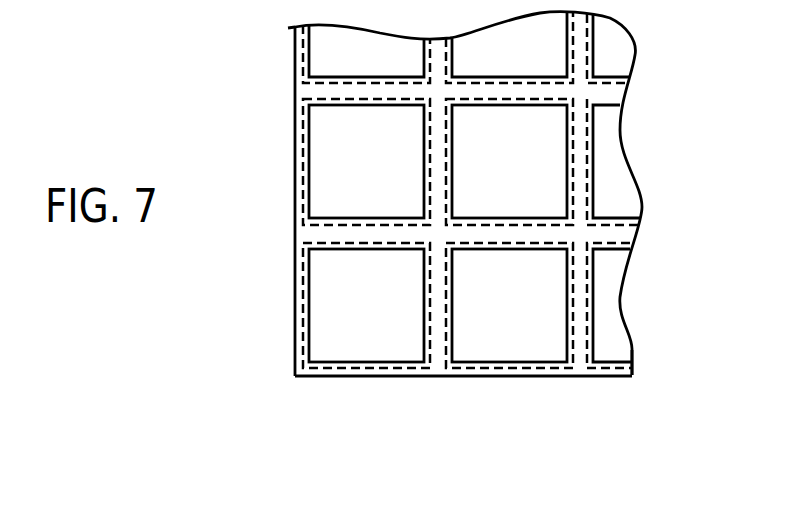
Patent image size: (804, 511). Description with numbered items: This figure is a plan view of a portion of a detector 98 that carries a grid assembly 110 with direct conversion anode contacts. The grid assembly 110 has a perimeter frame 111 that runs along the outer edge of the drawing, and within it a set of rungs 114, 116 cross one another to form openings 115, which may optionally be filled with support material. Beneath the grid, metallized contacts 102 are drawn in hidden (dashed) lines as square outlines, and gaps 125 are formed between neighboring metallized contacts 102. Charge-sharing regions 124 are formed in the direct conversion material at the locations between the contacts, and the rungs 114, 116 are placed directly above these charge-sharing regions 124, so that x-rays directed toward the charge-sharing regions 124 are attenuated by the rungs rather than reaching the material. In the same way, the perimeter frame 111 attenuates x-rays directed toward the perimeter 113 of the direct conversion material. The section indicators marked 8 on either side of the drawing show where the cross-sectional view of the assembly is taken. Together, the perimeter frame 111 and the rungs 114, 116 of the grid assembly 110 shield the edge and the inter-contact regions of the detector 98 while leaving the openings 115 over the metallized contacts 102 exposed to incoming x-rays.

The detector 98 is at (270, 33).
The perimeter of direct conversion material 113 is at (296, 95).
The rung 114 is at (512, 88).
The opening 115 is at (545, 143).
The rung 116 is at (580, 143).
The charge-sharing region 124 is at (288, 226).
The gap 125 is at (330, 237).
The metallized contact 102 is at (592, 277).
The perimeter frame 111 is at (440, 378).
The grid assembly 110 is at (608, 376).
The section line 8- 8 is at (288, 169).